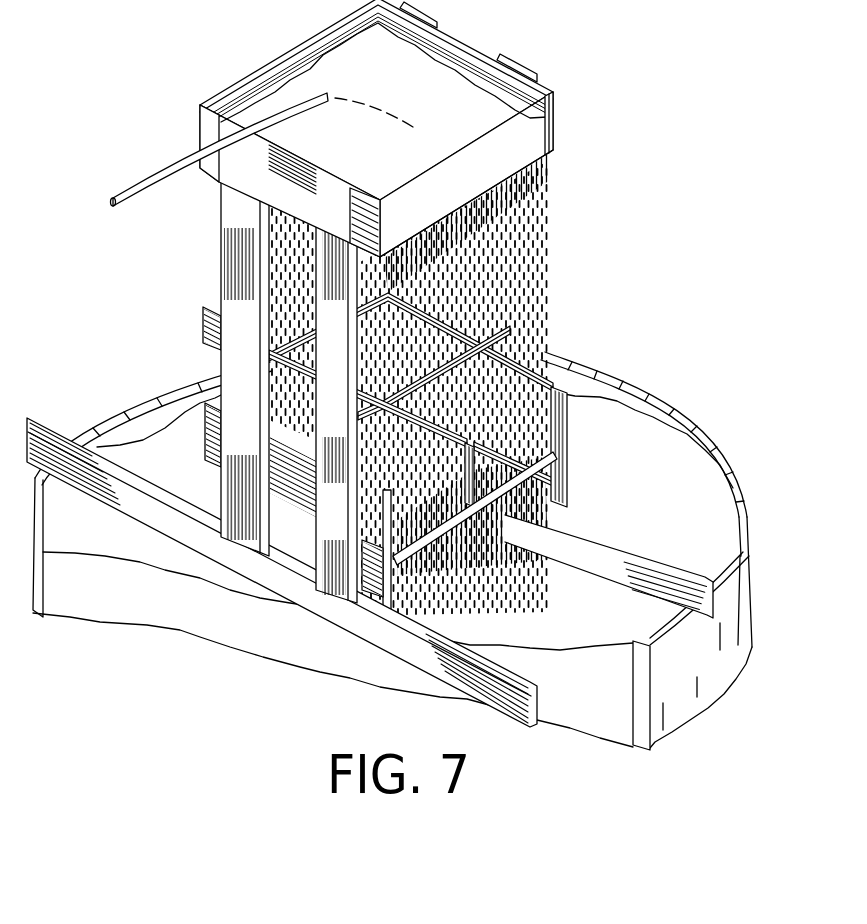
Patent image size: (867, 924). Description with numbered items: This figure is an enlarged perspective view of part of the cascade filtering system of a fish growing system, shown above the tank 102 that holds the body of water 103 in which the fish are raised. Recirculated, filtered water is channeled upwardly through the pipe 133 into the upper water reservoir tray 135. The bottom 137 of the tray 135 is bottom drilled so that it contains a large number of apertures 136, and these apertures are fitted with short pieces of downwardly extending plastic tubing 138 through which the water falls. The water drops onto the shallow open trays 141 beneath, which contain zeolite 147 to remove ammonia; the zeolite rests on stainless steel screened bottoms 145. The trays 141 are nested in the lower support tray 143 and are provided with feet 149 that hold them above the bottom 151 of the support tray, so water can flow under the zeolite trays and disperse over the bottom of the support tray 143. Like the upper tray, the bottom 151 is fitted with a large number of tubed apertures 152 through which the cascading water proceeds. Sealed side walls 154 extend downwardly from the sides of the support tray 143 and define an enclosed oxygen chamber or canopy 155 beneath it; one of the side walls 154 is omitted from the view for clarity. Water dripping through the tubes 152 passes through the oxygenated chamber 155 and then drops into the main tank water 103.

The tank 102 is at (728, 436).
The body of water 103 is at (597, 697).
The pipe 133 is at (171, 160).
The upper water reservoir tray 135 is at (463, 40).
The apertures 136 is at (553, 153).
The bottom of the tray 137 is at (553, 127).
The downwardly extending plastic tubing 138 is at (540, 178).
The shallow open trays 141 is at (562, 412).
The lower support tray 143 is at (520, 540).
The stainless steel screened bottoms 145 is at (548, 440).
The zeolite 147 is at (567, 434).
The feet 149 is at (567, 457).
The bottom of lower support tray 151 is at (328, 540).
The tubed apertures 152 is at (333, 580).
The sealed side walls 154 is at (207, 472).
The oxygen chamber 155 is at (500, 543).